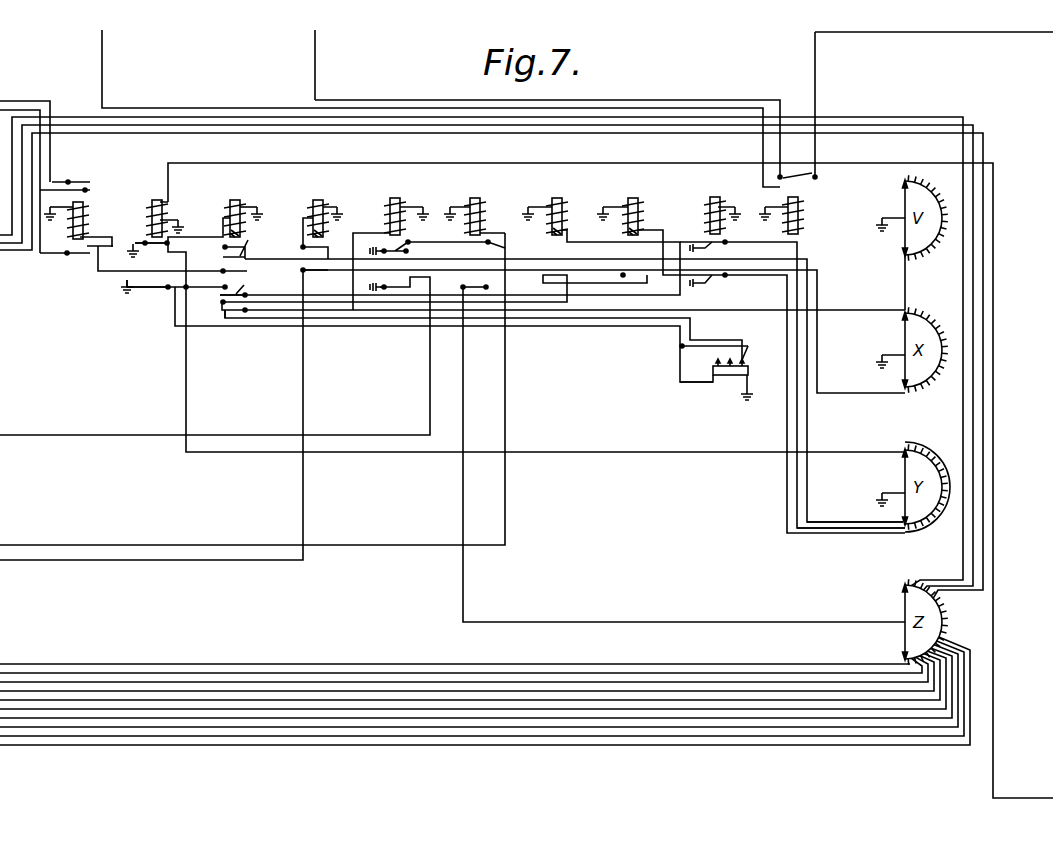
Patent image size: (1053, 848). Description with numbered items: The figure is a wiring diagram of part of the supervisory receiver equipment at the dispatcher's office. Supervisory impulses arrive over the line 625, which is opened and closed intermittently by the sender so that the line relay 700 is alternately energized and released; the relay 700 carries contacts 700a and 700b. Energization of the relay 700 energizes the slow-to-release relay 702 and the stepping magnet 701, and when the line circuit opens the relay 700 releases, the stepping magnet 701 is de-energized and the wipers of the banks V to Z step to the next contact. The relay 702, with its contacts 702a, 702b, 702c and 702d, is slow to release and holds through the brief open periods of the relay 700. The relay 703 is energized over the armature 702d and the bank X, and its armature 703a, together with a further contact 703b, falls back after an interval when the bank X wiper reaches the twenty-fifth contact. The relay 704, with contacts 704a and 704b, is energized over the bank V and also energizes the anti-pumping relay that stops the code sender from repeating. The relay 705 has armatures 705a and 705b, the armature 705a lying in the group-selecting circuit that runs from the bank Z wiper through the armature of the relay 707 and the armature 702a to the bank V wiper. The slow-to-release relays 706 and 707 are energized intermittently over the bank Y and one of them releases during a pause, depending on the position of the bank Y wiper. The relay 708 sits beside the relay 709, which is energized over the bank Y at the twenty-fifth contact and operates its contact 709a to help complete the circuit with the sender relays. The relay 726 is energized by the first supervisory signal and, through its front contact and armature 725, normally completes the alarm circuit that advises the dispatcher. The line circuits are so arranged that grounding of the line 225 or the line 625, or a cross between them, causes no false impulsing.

The line 225 is at (1002, 46).
The line 625 is at (993, 786).
The line relay 700 is at (156, 200).
The relay contact 700a is at (155, 287).
The relay contact 700b is at (140, 243).
The stepping magnet 701 is at (727, 378).
The relay 702 is at (236, 200).
The armature 702a is at (236, 320).
The relay contact 702b is at (240, 294).
The relay contact 702c is at (249, 271).
The armature 702d is at (246, 247).
The relay 703 is at (320, 200).
The armature 703a is at (306, 271).
The relay contact 703b is at (305, 247).
The relay 704 is at (396, 198).
The relay contact 704a is at (390, 292).
The relay contact 704b is at (400, 247).
The relay 705 is at (487, 188).
The armature 705a is at (486, 288).
The relay contact 705b is at (500, 246).
The relay 706 is at (558, 198).
The relay 707 is at (636, 198).
The relay 708 is at (714, 197).
The relay 709 is at (799, 208).
The relay contact 709a is at (818, 176).
The armature 725 is at (80, 179).
The relay 726 is at (83, 208).